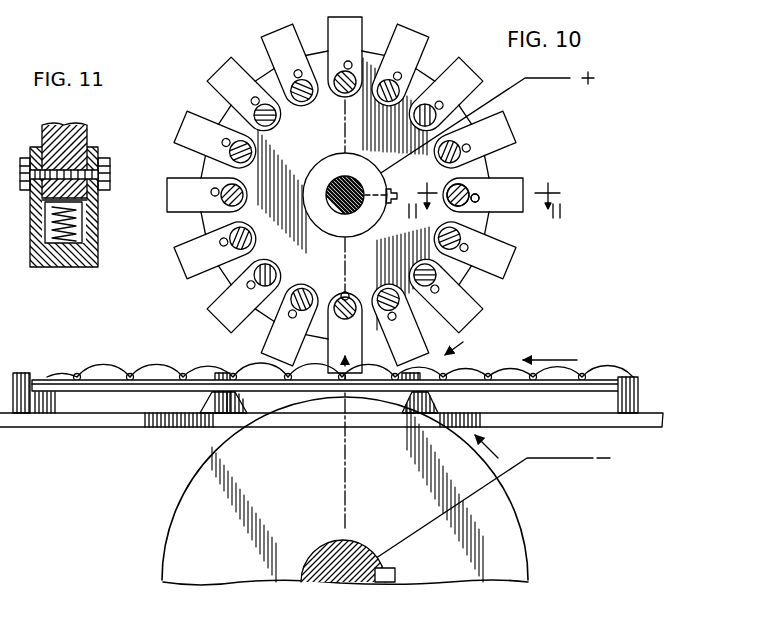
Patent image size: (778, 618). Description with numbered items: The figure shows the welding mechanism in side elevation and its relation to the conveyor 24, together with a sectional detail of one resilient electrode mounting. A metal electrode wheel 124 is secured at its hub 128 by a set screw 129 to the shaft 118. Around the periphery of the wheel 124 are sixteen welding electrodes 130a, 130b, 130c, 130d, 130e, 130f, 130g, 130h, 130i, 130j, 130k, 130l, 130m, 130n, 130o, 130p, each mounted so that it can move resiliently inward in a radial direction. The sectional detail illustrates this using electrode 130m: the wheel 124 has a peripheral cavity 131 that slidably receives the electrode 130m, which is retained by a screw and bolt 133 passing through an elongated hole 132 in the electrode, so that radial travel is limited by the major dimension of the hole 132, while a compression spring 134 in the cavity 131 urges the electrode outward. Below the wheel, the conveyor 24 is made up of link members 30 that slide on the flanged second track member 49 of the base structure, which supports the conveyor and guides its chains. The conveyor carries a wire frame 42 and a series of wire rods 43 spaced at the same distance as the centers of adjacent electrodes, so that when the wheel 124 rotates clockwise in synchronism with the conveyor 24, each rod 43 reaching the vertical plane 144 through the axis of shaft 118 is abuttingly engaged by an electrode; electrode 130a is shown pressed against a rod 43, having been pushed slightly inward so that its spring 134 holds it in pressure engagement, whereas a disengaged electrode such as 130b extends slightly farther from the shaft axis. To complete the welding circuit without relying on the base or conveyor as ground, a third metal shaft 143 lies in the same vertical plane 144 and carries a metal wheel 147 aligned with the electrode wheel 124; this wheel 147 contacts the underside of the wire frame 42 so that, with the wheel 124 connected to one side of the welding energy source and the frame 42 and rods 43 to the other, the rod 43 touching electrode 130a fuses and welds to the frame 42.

In FIG. 10, the conveyor 24 is at (641, 382).
In FIG. 10, the link members 30 is at (106, 365).
In FIG. 10, the wire frame 42 is at (127, 392).
In FIG. 10, the wire rod 43 is at (131, 373).
In FIG. 10, the second track member 49 is at (663, 414).
In FIG. 10, the shaft 118 is at (353, 209).
In FIG. 11, the electrode wheel 124 is at (78, 138).
In FIG. 10, the electrode wheel 124 is at (491, 164).
In FIG. 10, the hub 128 is at (324, 226).
In FIG. 10, the set screw 129 is at (397, 190).
In FIG. 10, the welding electrode 130a is at (345, 332).
In FIG. 10, the welding electrode 130b is at (302, 327).
In FIG. 10, the welding electrode 130c is at (255, 300).
In FIG. 10, the welding electrode 130d is at (222, 258).
In FIG. 10, the welding electrode 130e is at (207, 206).
In FIG. 10, the welding electrode 130f is at (213, 152).
In FIG. 10, the welding electrode 130g is at (239, 105).
In FIG. 10, the welding electrode 130h is at (282, 72).
In FIG. 10, the welding electrode 130i is at (334, 57).
In FIG. 10, the welding electrode 130j is at (387, 63).
In FIG. 10, the welding electrode 130k is at (434, 89).
In FIG. 10, the welding electrode 130l is at (468, 131).
In FIG. 11, the welding electrode 130m is at (75, 268).
In FIG. 10, the welding electrode 130m is at (485, 203).
In FIG. 10, the welding electrode 130n is at (485, 203).
In FIG. 10, the welding electrode 130o is at (450, 284).
In FIG. 10, the welding electrode 130p is at (397, 323).
In FIG. 11, the peripheral cavity 131 is at (88, 200).
In FIG. 11, the elongated hole 132 is at (86, 241).
In FIG. 10, the elongated hole 132 is at (478, 210).
In FIG. 11, the screw and bolt 133 is at (101, 169).
In FIG. 10, the screw and bolt 133 is at (467, 203).
In FIG. 11, the compression spring 134 is at (80, 218).
In FIG. 10, the third shaft 143 is at (363, 547).
In FIG. 10, the vertical plane 144 is at (347, 440).
In FIG. 10, the metal wheel 147 is at (513, 533).